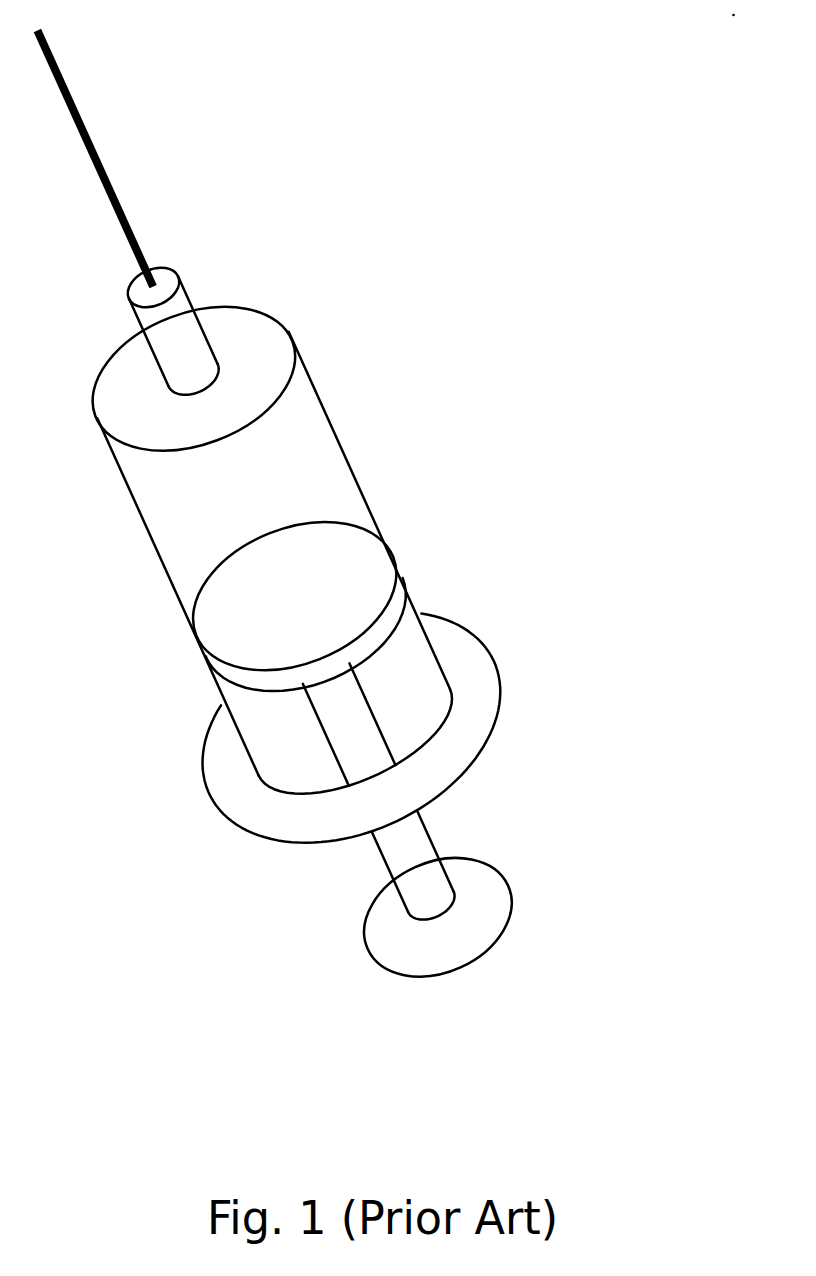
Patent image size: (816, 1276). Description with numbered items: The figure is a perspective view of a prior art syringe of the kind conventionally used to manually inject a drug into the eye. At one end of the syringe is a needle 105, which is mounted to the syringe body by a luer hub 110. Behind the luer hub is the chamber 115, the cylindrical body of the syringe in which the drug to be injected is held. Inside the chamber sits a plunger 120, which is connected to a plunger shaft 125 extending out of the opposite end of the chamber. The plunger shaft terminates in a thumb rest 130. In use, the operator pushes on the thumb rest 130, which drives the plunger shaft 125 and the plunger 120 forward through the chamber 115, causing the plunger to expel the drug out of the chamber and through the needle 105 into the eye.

The needle 105 is at (75, 105).
The luer hub 110 is at (187, 293).
The chamber 115 is at (330, 417).
The plunger 120 is at (332, 587).
The plunger shaft 125 is at (408, 828).
The thumb rest 130 is at (497, 937).